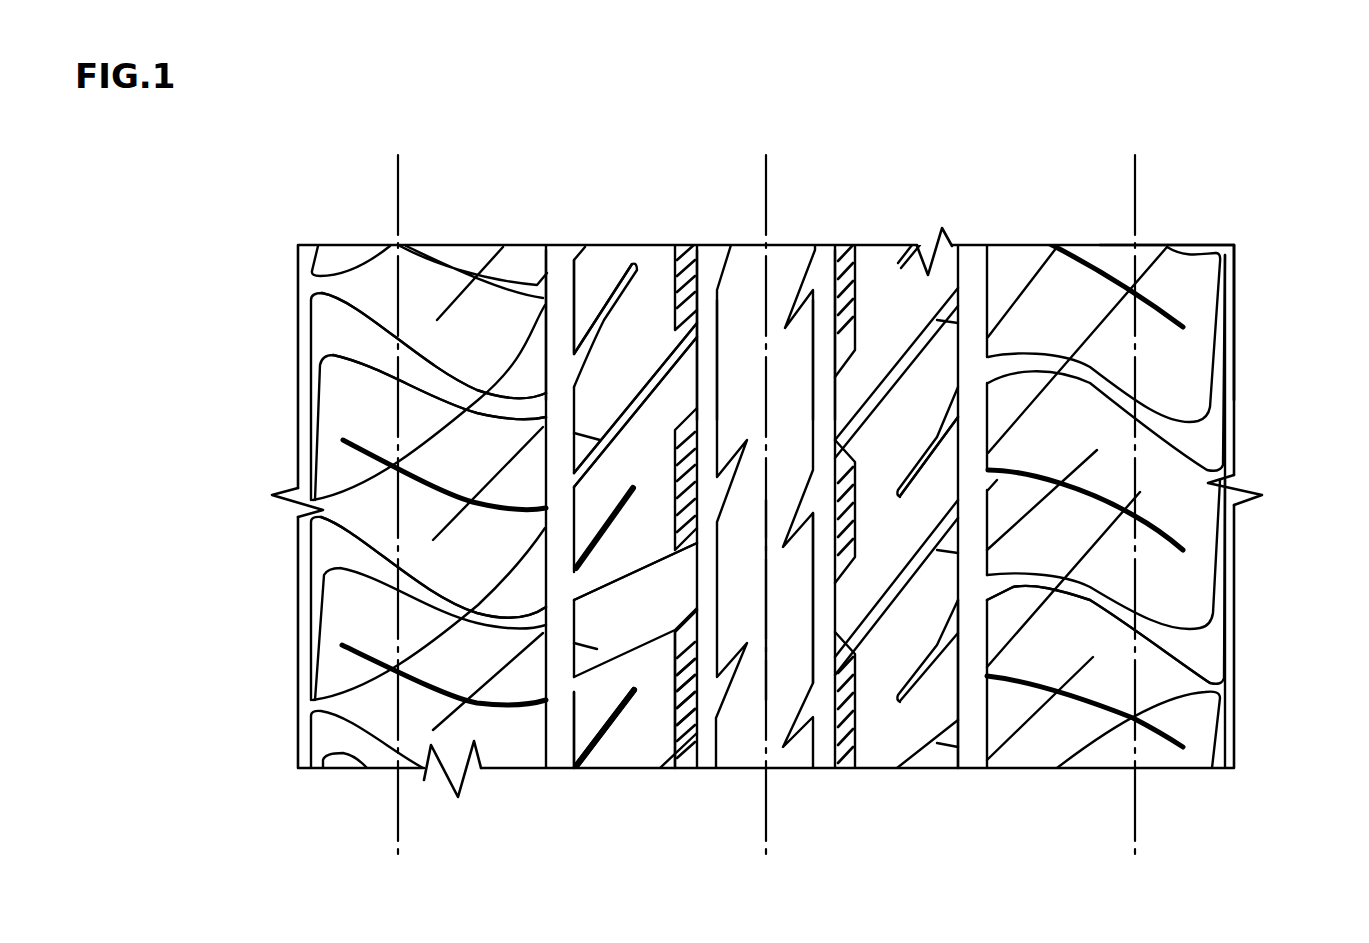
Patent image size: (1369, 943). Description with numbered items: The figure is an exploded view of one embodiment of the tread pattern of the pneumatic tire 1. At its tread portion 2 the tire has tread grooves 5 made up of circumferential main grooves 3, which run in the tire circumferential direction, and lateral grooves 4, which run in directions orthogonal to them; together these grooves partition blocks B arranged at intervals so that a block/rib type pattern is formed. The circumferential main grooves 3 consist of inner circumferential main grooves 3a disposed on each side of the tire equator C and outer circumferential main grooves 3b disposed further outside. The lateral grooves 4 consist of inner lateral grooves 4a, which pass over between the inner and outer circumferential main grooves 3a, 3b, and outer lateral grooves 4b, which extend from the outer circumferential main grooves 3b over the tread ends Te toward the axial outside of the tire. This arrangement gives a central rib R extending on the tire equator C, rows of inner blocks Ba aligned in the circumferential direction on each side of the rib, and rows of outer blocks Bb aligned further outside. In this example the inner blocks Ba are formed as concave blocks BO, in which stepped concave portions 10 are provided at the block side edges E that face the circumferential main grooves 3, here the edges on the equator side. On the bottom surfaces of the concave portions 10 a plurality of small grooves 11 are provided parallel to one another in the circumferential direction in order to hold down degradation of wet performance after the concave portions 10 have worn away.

The pneumatic tire 1 is at (1206, 230).
The tread portion 2 is at (1264, 236).
The circumferential main grooves 3 is at (827, 327).
The inner circumferential main grooves 3a is at (802, 265).
The outer circumferential main grooves 3b is at (982, 313).
The lateral grooves 4 is at (663, 355).
The inner lateral grooves 4a is at (641, 319).
The outer lateral grooves 4b is at (420, 375).
The tread grooves 5 is at (553, 275).
The stepped concave portions 10 is at (685, 762).
The small grooves 11 is at (711, 717).
The tread ends Te is at (398, 178).
The tire equator C is at (767, 178).
The block side edges E is at (697, 590).
The central rib R is at (800, 757).
The blocks B is at (886, 733).
The inner blocks Ba is at (746, 766).
The outer blocks Bb is at (1040, 745).
The concave blocks BO is at (600, 755).